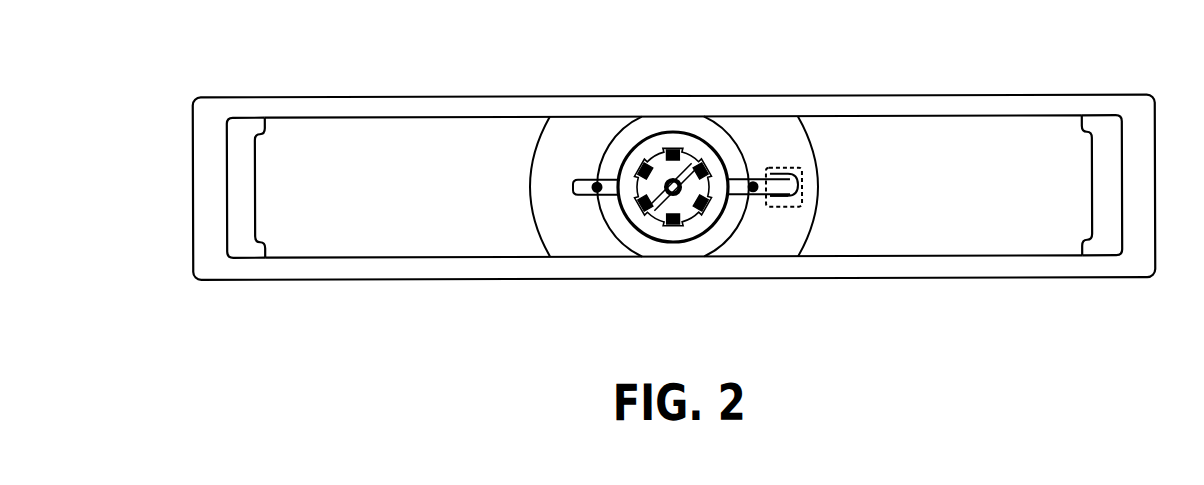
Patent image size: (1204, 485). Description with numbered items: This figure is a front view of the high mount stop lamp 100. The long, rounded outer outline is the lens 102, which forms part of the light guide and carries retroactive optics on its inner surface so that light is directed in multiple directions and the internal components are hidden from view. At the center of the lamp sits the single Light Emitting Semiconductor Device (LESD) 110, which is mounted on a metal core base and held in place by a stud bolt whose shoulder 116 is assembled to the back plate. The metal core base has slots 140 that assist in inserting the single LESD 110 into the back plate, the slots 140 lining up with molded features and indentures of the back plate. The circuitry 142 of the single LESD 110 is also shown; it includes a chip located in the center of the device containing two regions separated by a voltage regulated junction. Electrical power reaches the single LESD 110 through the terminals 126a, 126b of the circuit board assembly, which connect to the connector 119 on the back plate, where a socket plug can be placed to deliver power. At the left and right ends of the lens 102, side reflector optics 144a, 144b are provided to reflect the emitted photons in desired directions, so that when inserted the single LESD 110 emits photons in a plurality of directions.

The high mount stop lamp 100 is at (359, 48).
The lens 102 is at (429, 271).
The single Light Emitting Semiconductor Device (LESD) 110 is at (673, 138).
The shoulder 116 is at (679, 252).
The connector 119 is at (776, 160).
The terminal 126a is at (808, 177).
The terminal 126b is at (808, 195).
The slots 140 is at (700, 224).
The circuitry 142 is at (661, 222).
The side reflector optics 144a is at (265, 218).
The side reflector optics 144b is at (1085, 219).